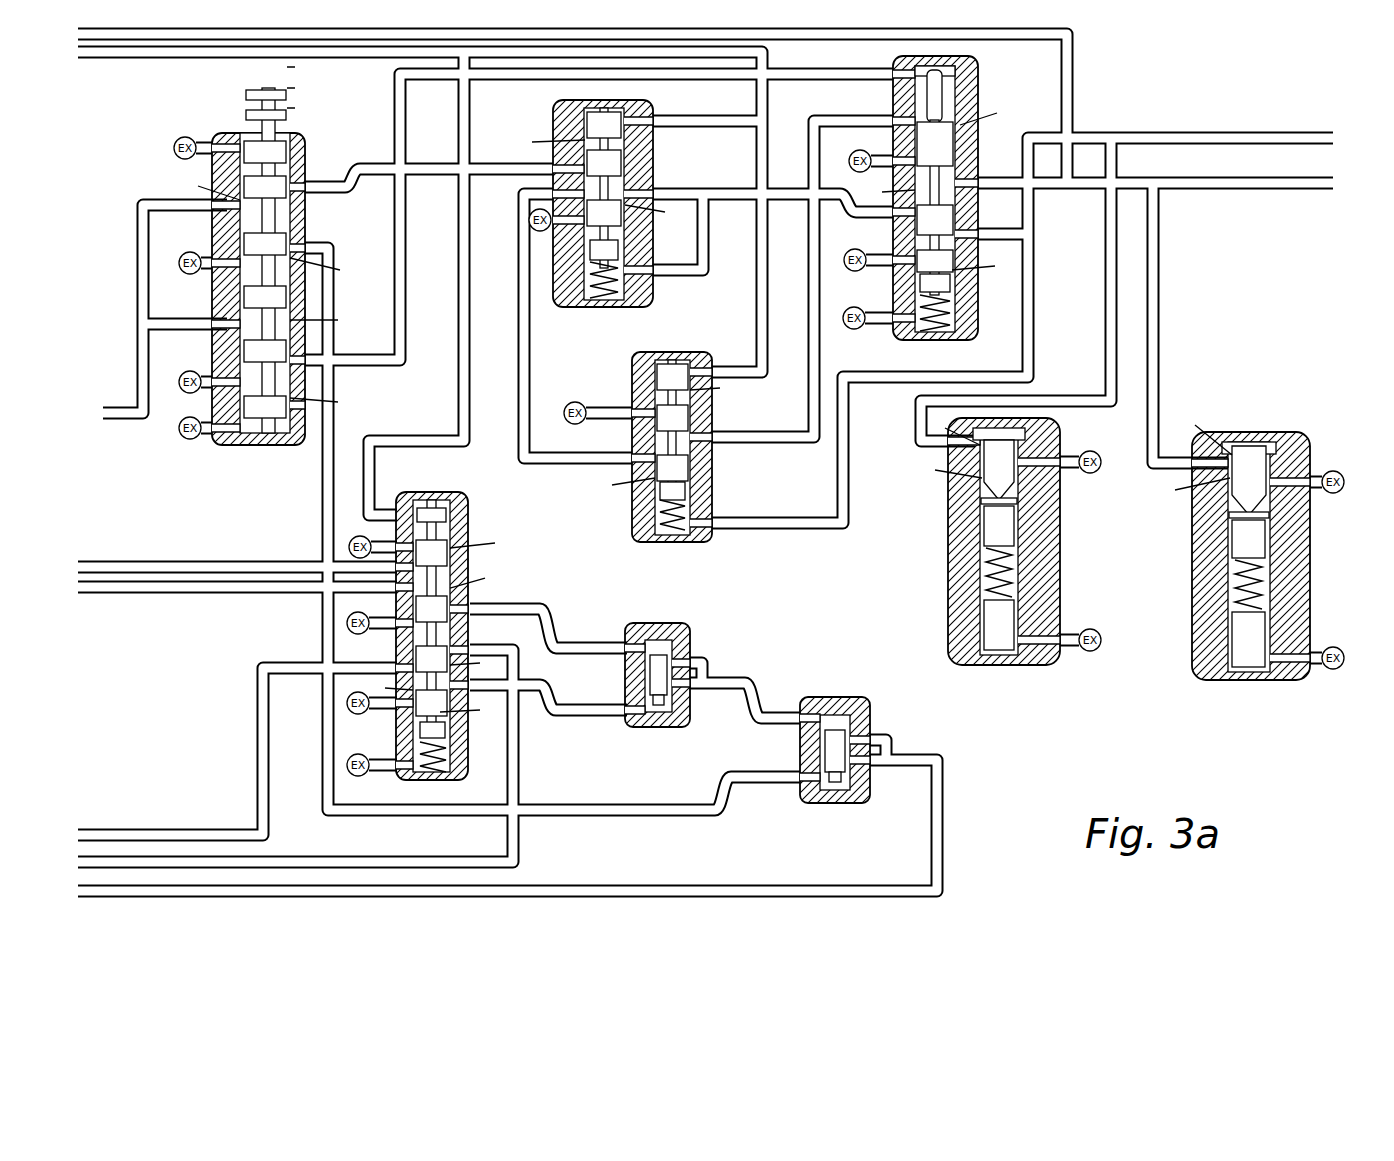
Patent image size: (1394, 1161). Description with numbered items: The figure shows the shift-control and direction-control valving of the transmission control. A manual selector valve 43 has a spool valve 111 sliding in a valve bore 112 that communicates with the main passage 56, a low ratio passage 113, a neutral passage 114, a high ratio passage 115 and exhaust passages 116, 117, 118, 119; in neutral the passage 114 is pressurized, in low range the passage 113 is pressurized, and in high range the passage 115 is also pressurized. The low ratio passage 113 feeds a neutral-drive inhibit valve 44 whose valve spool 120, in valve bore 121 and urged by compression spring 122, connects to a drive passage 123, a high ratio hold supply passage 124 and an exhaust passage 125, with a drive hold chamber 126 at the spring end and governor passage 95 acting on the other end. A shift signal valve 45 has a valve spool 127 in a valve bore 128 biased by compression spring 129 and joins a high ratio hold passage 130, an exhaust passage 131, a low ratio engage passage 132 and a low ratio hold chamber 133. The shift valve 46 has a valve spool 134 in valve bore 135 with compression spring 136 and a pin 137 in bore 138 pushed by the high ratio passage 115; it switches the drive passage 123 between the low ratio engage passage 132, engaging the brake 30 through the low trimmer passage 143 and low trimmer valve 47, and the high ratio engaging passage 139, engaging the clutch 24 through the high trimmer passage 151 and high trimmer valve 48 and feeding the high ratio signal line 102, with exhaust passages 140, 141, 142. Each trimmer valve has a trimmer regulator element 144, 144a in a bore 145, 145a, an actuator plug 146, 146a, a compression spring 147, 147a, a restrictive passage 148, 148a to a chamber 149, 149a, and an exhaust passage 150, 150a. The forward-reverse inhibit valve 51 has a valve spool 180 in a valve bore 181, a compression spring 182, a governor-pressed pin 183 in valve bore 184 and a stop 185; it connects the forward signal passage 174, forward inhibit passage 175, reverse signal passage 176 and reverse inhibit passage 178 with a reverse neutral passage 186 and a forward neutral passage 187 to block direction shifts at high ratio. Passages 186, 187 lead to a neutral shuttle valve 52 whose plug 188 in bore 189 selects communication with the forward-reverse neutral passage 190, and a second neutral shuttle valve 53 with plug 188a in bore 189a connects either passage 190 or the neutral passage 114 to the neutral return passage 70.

The high ratio signal line 102 is at (116, 37).
The governor passage 95 is at (207, 55).
The clutch 24 is at (1200, 197).
The brake 30 is at (1239, 149).
The manual selector valve 43 is at (236, 285).
The spool valve 111 is at (262, 228).
The valve bore 112 is at (290, 160).
The low ratio passage 113 is at (340, 192).
The neutral passage 114 is at (330, 255).
The high ratio passage 115 is at (403, 312).
The exhaust passage 116 is at (185, 438).
The exhaust passage 117 is at (190, 371).
The exhaust passage 118 is at (186, 273).
The exhaust passage 119 is at (176, 145).
The main passage 56 is at (137, 348).
The neutral-drive inhibit valve 44 is at (593, 209).
The valve spool 120 is at (610, 150).
The valve bore 121 is at (625, 178).
The compression spring 122 is at (620, 248).
The drive passage 123 is at (708, 205).
The high ratio hold supply passage 124 is at (520, 290).
The exhaust passage 125 is at (530, 220).
The drive hold chamber 126 is at (625, 290).
The shift signal valve 45 is at (649, 462).
The valve spool 127 is at (690, 418).
The valve bore 128 is at (655, 437).
The compression spring 129 is at (690, 492).
The high ratio hold passage 130 is at (768, 440).
The exhaust passage 131 is at (562, 412).
The low ratio engage passage 132 is at (1034, 262).
The low ratio hold chamber 133 is at (657, 515).
The shift valve 46 is at (935, 202).
The valve spool 134 is at (945, 165).
The valve bore 135 is at (915, 230).
The compression spring 136 is at (950, 300).
The pin 137 is at (955, 72).
The bore 138 is at (927, 96).
The high ratio engaging passage 139 is at (1045, 198).
The exhaust passage 140 is at (847, 332).
The exhaust passage 141 is at (854, 274).
The exhaust passage 142 is at (849, 151).
The low trimmer passage 143 is at (1111, 350).
The high trimmer passage 151 is at (1158, 288).
The low trimmer valve 47 is at (994, 552).
The trimmer regulator element 144 is at (1030, 440).
The bore 145 is at (1020, 495).
The actuator plug 146 is at (988, 545).
The compression spring 147 is at (990, 575).
The restrictive passage 148 is at (985, 490).
The chamber 149 is at (985, 515).
The exhaust passage 150 is at (1078, 472).
The high trimmer valve 48 is at (1265, 540).
The trimmer regulator element 144a is at (1270, 470).
The bore 145a is at (1268, 505).
The actuator plug 146a is at (1262, 550).
The compression spring 147a is at (1262, 585).
The restrictive passage 148a is at (1232, 500).
The chamber 149a is at (1235, 520).
The exhaust passage 150a is at (1336, 472).
The forward-reverse inhibit valve 51 is at (440, 645).
The valve spool 180 is at (440, 620).
The valve bore 181 is at (416, 648).
The compression spring 182 is at (445, 740).
The pin 183 is at (405, 485).
The valve bore 184 is at (440, 508).
The stop 185 is at (445, 765).
The reverse neutral passage 186 is at (560, 625).
The forward neutral passage 187 is at (560, 715).
The neutral shuttle valve 52 is at (667, 676).
The plug 188 is at (675, 650).
The bore 189 is at (645, 680).
The forward-reverse neutral passage 190 is at (760, 683).
The neutral shuttle valve 53 is at (874, 758).
The plug 188a is at (858, 735).
The bore 189a is at (852, 775).
The neutral return passage 70 is at (205, 890).
The forward signal passage 174 is at (143, 860).
The forward inhibit passage 175 is at (100, 834).
The reverse signal passage 176 is at (180, 590).
The reverse inhibit passage 178 is at (150, 567).